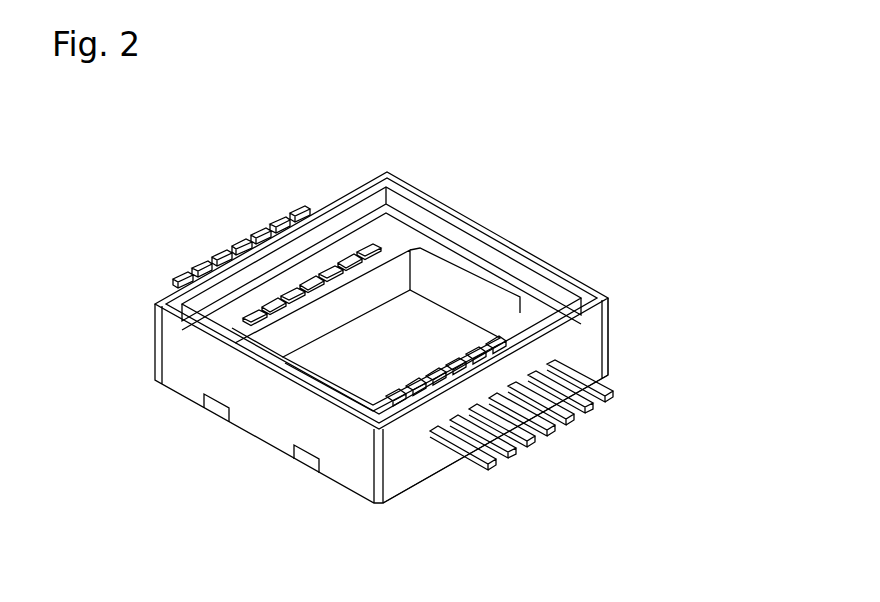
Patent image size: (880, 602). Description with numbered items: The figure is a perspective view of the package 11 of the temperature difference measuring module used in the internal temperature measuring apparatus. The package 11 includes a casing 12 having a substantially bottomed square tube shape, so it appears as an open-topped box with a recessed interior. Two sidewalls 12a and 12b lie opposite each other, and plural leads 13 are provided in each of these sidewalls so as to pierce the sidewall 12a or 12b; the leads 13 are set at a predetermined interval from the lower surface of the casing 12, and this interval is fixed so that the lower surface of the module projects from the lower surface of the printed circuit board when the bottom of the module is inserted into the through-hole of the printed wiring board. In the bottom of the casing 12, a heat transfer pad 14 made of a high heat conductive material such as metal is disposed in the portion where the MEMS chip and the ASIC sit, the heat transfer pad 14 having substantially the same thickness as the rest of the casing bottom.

The package 11 is at (640, 158).
The casing 12 is at (559, 276).
The sidewall 12a is at (603, 332).
The sidewall 12b is at (160, 300).
The lead 13 is at (297, 208).
The heat transfer pad 14 is at (425, 330).